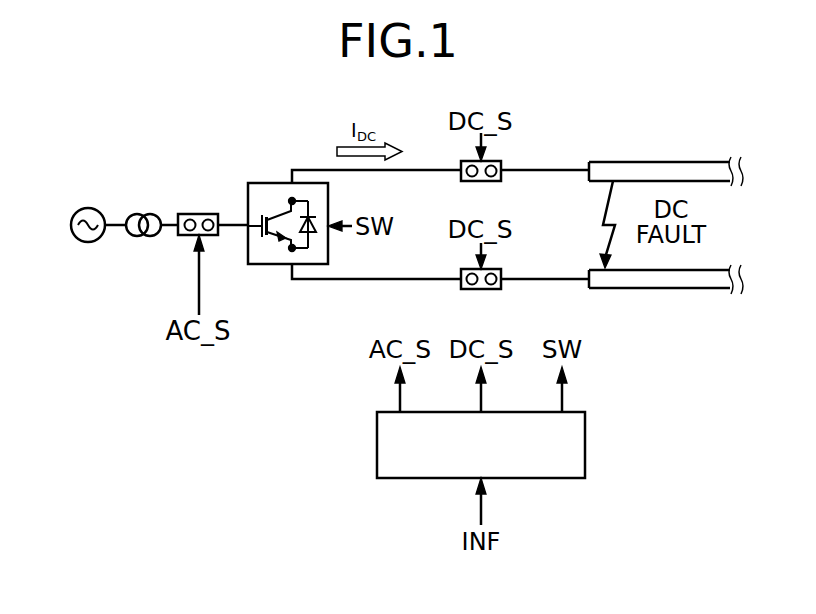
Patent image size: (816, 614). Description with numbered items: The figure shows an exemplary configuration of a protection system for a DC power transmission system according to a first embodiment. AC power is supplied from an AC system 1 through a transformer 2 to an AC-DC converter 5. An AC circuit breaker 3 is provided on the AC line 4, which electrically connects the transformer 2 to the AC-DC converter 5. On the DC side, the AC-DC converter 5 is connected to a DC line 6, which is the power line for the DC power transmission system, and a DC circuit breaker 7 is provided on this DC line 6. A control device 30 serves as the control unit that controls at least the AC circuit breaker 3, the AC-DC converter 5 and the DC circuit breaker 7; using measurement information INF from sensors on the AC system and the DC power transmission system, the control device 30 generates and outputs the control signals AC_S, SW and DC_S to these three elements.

The AC system 1 is at (87, 208).
The transformer 2 is at (137, 237).
The AC circuit breaker 3 is at (185, 212).
The AC line 4 is at (226, 232).
The AC-DC converter 5 is at (254, 182).
The DC line 6 is at (613, 158).
The DC circuit breaker 7 is at (502, 179).
The control device 30 is at (586, 444).